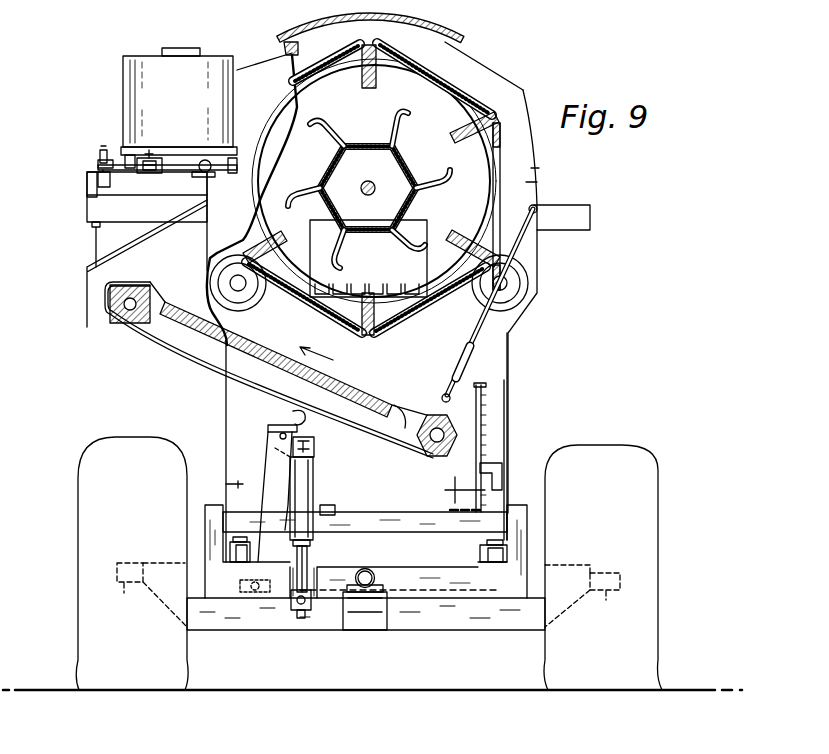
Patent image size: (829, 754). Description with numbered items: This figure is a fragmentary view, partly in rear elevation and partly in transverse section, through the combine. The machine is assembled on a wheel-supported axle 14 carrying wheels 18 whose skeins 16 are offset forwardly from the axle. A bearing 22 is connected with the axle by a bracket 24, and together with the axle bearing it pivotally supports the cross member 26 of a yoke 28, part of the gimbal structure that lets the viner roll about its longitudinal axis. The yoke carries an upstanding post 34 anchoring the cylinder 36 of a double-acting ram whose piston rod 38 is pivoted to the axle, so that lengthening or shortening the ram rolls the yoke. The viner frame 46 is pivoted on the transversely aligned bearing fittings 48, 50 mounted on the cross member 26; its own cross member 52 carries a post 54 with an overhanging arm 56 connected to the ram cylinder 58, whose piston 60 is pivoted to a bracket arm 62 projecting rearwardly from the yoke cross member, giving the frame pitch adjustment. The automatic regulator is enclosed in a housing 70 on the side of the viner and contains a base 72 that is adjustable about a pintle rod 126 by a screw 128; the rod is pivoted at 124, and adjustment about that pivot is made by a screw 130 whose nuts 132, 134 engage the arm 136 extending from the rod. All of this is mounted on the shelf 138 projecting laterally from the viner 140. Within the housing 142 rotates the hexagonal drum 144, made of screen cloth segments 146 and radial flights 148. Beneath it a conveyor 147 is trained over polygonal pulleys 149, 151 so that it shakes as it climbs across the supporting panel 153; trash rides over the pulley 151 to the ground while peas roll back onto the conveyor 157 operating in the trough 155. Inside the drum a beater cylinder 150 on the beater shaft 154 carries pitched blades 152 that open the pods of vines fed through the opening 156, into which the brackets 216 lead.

The axle 14 is at (244, 630).
The skeins 16 is at (124, 588).
The wheels 18 is at (90, 578).
The bearing 22 is at (376, 578).
The bracket 24 is at (374, 630).
The cross member 26 is at (441, 590).
The yoke 28 is at (210, 510).
The upstanding post 34 is at (292, 480).
The cylinder 36 is at (270, 456).
The piston rod 38 is at (306, 554).
The viner frame 46 is at (236, 483).
The bearing fitting 48 is at (494, 570).
The bearing fitting 50 is at (237, 560).
The cross member 52 is at (383, 519).
The post 54 is at (333, 510).
The overhanging arm 56 is at (313, 447).
The ram cylinder 58 is at (309, 488).
The piston 60 is at (314, 570).
The bracket arm 62 is at (300, 620).
The housing 70 is at (142, 88).
The base 72 is at (160, 150).
The pivot 124 is at (203, 173).
The pintle rod 126 is at (231, 174).
The screw 128 is at (146, 157).
The screw 130 is at (87, 178).
The nut 132 is at (101, 151).
The nut 134 is at (99, 161).
The arm 136 is at (112, 172).
The shelf 138 is at (112, 206).
The viner 140 is at (223, 232).
The housing 142 is at (540, 170).
The drum 144 is at (488, 102).
The screen cloth segments 146 is at (466, 55).
The conveyor 147 is at (362, 386).
The radial flights 148 is at (500, 124).
The polygonal pulley 149 is at (458, 424).
The beater cylinder 150 is at (377, 186).
The polygonal pulley 151 is at (133, 324).
The blades 152 is at (394, 117).
The supporting panel 153 is at (292, 362).
The beater shaft 154 is at (369, 181).
The trough 155 is at (470, 472).
The opening 156 is at (428, 233).
The conveyor 157 is at (460, 492).
The brackets 216 is at (367, 283).